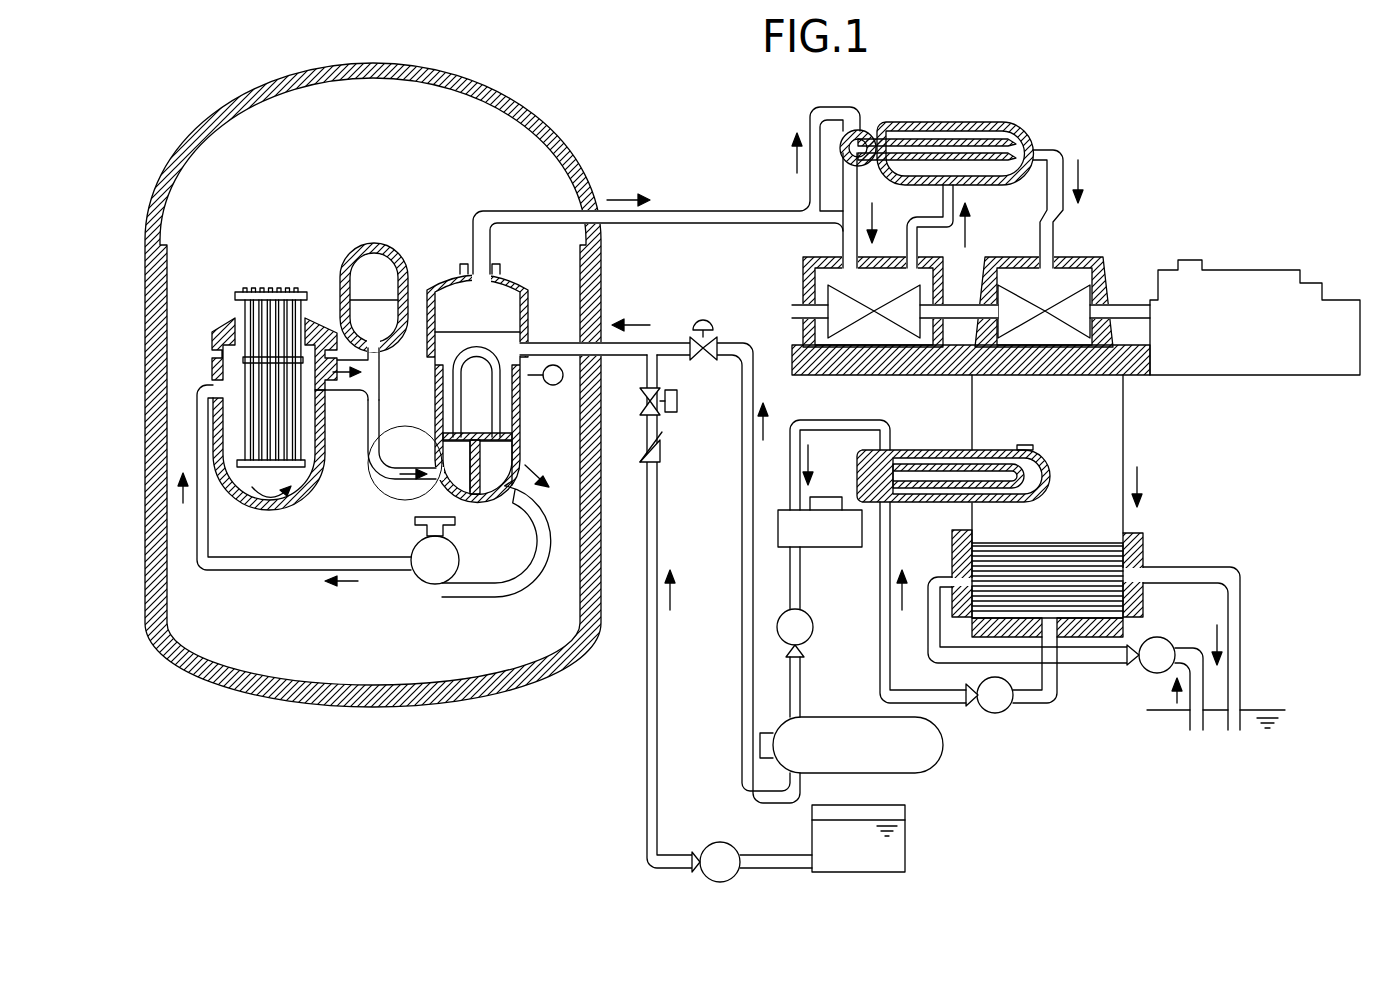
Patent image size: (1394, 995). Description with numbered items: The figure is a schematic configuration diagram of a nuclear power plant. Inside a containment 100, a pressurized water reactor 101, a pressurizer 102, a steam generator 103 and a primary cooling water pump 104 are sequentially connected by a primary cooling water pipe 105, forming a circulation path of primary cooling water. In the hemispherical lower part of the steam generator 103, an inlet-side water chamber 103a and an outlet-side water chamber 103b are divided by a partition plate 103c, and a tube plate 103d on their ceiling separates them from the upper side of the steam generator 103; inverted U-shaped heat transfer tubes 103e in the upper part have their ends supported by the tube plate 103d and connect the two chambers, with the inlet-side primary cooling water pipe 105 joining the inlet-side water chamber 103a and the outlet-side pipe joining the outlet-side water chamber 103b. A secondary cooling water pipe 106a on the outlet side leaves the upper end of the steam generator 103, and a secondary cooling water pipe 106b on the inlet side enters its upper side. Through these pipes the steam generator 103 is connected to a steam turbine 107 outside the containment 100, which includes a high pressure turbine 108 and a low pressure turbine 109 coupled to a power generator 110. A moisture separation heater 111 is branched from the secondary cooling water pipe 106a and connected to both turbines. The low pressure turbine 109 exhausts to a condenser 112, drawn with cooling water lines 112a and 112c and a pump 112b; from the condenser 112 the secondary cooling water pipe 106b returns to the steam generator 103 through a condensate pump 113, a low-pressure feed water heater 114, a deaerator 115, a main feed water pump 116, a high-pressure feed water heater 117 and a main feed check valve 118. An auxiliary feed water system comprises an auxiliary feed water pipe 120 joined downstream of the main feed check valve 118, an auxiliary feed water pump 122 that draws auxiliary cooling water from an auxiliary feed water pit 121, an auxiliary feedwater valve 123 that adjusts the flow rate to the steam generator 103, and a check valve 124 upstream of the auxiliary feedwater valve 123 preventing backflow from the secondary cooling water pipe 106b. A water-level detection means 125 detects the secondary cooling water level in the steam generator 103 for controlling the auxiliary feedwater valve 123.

The containment 100 is at (227, 96).
The pressurized water reactor 101 is at (243, 323).
The pressurizer 102 is at (360, 245).
The steam generator 103 is at (440, 275).
The inlet-side water chamber 103a is at (445, 462).
The outlet-side water chamber 103b is at (500, 470).
The partition plate 103c is at (490, 470).
The tube plate 103d is at (388, 485).
The heat transfer tubes 103e is at (477, 350).
The primary cooling water pump 104 is at (420, 580).
The primary cooling water pipe 105 is at (379, 435).
The secondary cooling water pipe on outlet side 106a is at (703, 210).
The secondary cooling water pipe on inlet side 106b is at (742, 700).
The steam turbine 107 is at (794, 293).
The high pressure turbine 108 is at (810, 255).
The low pressure turbine 109 is at (1098, 257).
The power generator 110 is at (1313, 270).
The moisture separation heater 111 is at (899, 117).
The condenser 112 is at (1123, 435).
The cooling water intake pipe 112a is at (928, 572).
The circulating water pump 112b is at (1162, 638).
The cooling water discharge pipe 112c is at (1242, 608).
The condensate pump 113 is at (1005, 710).
The low-pressure feed water heater 114 is at (918, 450).
The deaerator 115 is at (828, 497).
The main feed water pump 116 is at (812, 618).
The high-pressure feed water heater 117 is at (835, 715).
The main feed check valve 118 is at (703, 320).
The auxiliary feed water pipe 120 is at (647, 758).
The auxiliary feed water pit 121 is at (906, 855).
The auxiliary feed water pump 122 is at (713, 843).
The auxiliary feedwater valve 123 is at (677, 400).
The check valve 124 is at (662, 447).
The water-level detection means 125 is at (553, 386).